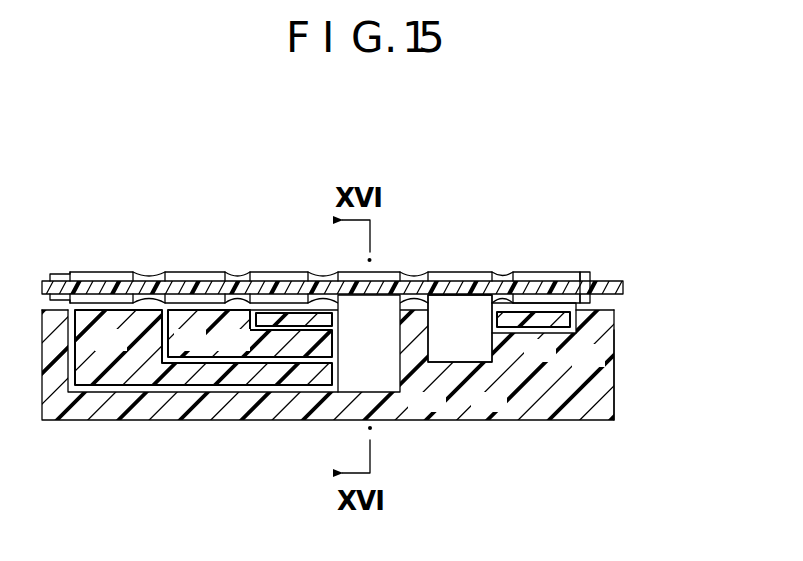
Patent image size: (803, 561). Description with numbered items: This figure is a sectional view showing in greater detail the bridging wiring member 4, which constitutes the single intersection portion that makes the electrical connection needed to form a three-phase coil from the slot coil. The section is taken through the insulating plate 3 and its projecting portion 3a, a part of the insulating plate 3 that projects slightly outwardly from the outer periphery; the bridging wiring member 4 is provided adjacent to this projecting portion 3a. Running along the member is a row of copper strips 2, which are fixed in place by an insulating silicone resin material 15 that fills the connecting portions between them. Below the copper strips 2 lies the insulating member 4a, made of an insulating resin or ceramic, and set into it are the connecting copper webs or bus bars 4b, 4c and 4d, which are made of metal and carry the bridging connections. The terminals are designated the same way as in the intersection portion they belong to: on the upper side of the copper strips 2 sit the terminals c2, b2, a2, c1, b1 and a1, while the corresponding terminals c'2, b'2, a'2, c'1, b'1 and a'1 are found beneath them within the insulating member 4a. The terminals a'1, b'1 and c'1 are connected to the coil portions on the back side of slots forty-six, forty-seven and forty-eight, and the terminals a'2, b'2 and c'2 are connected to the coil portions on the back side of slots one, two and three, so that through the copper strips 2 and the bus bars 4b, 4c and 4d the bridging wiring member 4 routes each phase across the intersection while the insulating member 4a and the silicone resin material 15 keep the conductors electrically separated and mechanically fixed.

The copper strips 2 is at (552, 275).
The insulating plate 3 is at (620, 282).
The projecting portion of the insulating plate 3a is at (98, 288).
The bridging wiring member 4 is at (614, 416).
The insulating member 4a is at (614, 383).
The connecting copper web 4b is at (395, 375).
The connecting copper web 4c is at (483, 353).
The connecting copper web 4d is at (567, 334).
The insulating silicone resin material 15 is at (497, 275).
The terminal a1 is at (530, 273).
The terminal b1 is at (447, 272).
The terminal c1 is at (352, 272).
The terminal a2 is at (277, 273).
The terminal b2 is at (195, 272).
The terminal c2 is at (124, 272).
The terminal a'1 is at (390, 355).
The terminal b'1 is at (460, 328).
The terminal c'1 is at (369, 343).
The terminal a'2 is at (390, 355).
The terminal b'2 is at (390, 355).
The terminal c'2 is at (390, 355).